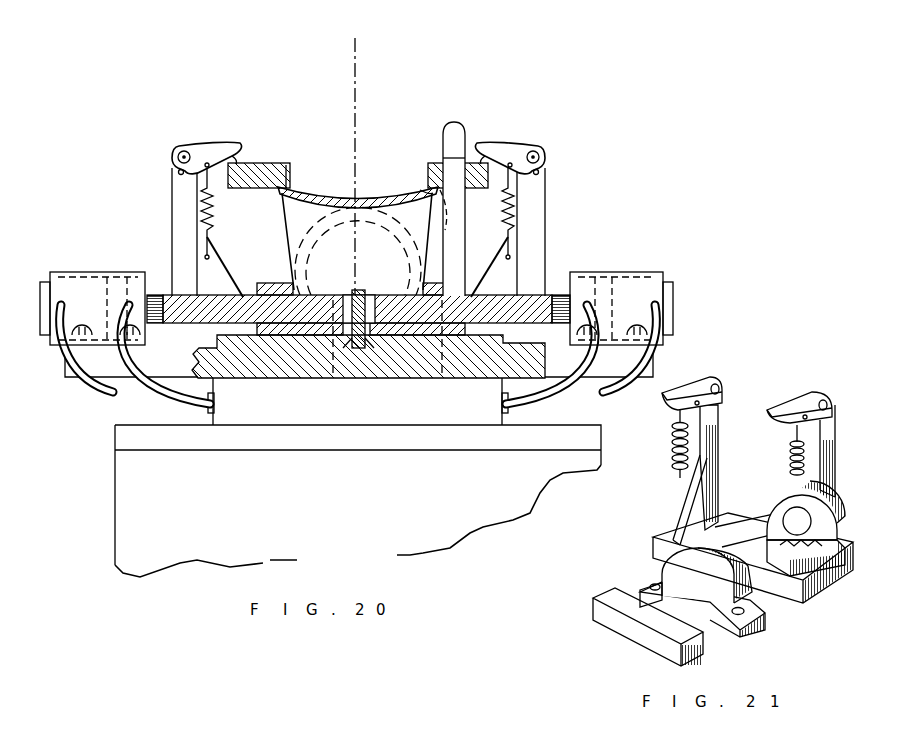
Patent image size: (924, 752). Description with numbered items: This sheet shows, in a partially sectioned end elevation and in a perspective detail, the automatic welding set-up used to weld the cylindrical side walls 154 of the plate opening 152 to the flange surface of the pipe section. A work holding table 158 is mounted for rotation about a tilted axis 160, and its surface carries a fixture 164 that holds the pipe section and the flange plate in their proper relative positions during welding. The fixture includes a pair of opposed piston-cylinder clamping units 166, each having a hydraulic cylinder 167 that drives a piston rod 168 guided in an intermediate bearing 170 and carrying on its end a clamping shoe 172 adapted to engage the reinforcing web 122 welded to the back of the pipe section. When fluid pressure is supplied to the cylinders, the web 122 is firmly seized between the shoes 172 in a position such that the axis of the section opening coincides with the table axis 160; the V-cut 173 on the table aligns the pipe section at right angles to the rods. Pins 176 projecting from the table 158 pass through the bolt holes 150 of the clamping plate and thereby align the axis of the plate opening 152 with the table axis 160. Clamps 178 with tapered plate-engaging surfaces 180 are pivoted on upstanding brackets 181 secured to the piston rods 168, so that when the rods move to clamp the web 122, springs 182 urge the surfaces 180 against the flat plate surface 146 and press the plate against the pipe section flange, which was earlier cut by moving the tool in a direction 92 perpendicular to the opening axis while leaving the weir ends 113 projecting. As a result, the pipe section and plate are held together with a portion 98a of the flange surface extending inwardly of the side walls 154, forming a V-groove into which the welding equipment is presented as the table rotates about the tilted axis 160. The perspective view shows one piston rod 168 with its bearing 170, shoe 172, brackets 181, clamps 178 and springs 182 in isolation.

In FIG. 20, the tilted axis 160 is at (357, 73).
In FIG. 20, the work holding table 158 is at (122, 477).
In FIG. 20, the fixture 164 is at (208, 380).
In FIG. 20, the reinforcing web 122 is at (345, 337).
In FIG. 20, the intermediate bearing 170 is at (270, 285).
In FIG. 21, the intermediate bearing 170 is at (680, 570).
In FIG. 20, the V-cut 173 is at (357, 350).
In FIG. 20, the clamping shoe 172 is at (345, 295).
In FIG. 21, the clamping shoe 172 is at (648, 623).
In FIG. 20, the flat surface of clamping plate 146 is at (285, 190).
In FIG. 20, the direction perpendicular to the opening axis 92 is at (352, 188).
In FIG. 20, the weir ends 113 is at (418, 185).
In FIG. 20, the flange surface portion 98a is at (293, 186).
In FIG. 20, the central circular diaphragm opening 152 is at (283, 163).
In FIG. 20, the cylindrical side walls 154 is at (432, 162).
In FIG. 20, the pins 176 is at (461, 133).
In FIG. 20, the bolt holes 150 is at (460, 206).
In FIG. 20, the upstanding brackets 181 is at (178, 193).
In FIG. 21, the upstanding brackets 181 is at (718, 447).
In FIG. 20, the clamps 178 is at (212, 150).
In FIG. 21, the clamps 178 is at (687, 387).
In FIG. 20, the tapered plate-engaging surfaces 180 is at (237, 158).
In FIG. 20, the springs 182 is at (212, 202).
In FIG. 21, the springs 182 is at (674, 440).
In FIG. 20, the hydraulic cylinder 167 is at (78, 272).
In FIG. 20, the piston rod 168 is at (158, 295).
In FIG. 21, the piston rod 168 is at (783, 517).
In FIG. 20, the piston-cylinder clamping units 166 is at (145, 233).